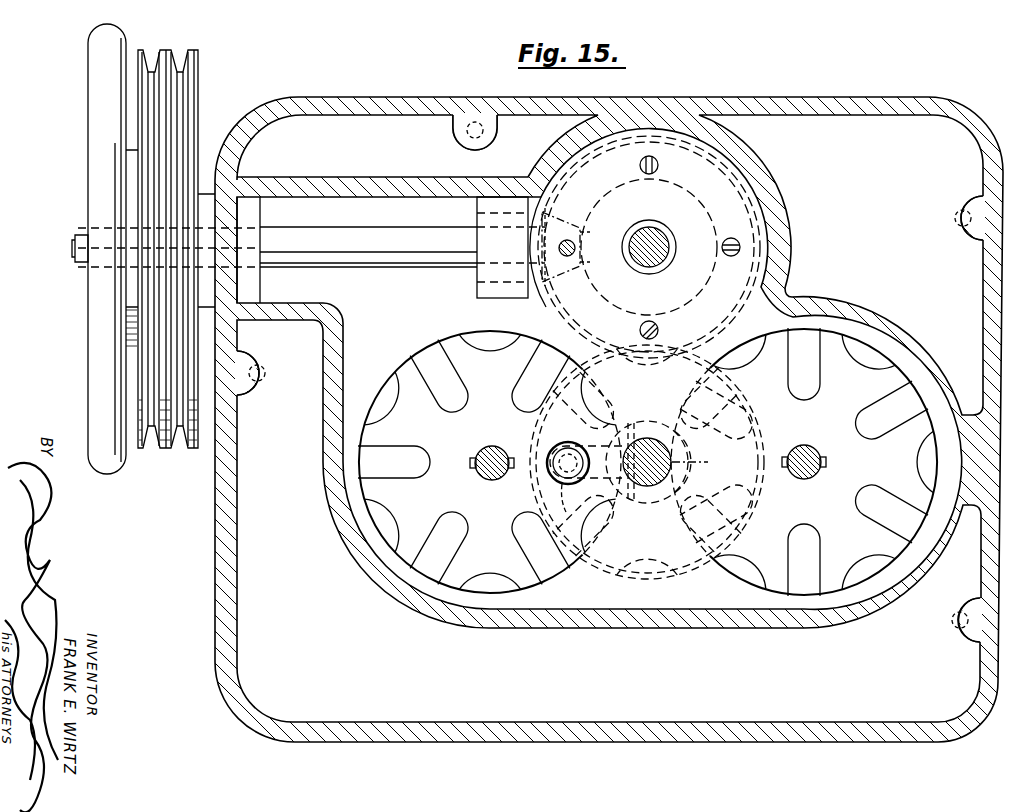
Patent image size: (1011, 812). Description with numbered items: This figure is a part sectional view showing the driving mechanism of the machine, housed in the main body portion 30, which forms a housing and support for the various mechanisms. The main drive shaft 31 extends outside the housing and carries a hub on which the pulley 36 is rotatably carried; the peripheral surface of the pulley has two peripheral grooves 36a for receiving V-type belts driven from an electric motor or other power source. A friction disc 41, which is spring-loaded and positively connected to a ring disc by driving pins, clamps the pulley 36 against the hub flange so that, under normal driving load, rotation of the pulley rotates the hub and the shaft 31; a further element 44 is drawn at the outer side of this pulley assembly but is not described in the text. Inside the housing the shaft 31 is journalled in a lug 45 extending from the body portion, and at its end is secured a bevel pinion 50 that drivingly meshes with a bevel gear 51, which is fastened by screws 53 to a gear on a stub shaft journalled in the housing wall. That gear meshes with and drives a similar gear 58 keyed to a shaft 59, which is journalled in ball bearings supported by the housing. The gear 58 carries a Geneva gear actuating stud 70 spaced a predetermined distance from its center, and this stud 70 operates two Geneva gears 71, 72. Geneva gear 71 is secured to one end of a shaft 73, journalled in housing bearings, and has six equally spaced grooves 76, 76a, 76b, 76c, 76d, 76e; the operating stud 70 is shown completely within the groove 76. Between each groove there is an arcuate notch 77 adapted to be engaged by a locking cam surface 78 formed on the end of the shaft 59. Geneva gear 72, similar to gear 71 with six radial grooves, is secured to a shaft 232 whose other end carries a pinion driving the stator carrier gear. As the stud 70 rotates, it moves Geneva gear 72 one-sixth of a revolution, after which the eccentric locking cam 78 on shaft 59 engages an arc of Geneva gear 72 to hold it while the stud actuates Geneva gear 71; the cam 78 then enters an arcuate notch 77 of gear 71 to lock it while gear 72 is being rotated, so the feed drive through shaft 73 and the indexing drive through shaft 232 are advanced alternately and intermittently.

The main body portion 30 is at (788, 103).
The main drive shaft 31 is at (395, 245).
The pulley 36 is at (195, 231).
The peripheral grooves 36a is at (183, 52).
The friction disc 41 is at (128, 282).
The pulley disc 44 is at (104, 86).
The lug 45 is at (480, 290).
The bevel pinion 50 is at (587, 216).
The bevel gear 51 is at (738, 198).
The screws 53 is at (740, 247).
The gear 58 is at (652, 578).
The shaft 59 is at (654, 452).
The Geneva gear actuating stud 70 is at (568, 482).
The Geneva gear 71 is at (501, 453).
The Geneva gear 72 is at (772, 372).
The shaft 73 is at (494, 450).
The groove 76 is at (586, 443).
The groove 76a is at (527, 379).
The groove 76b is at (455, 379).
The groove 76c is at (394, 444).
The groove 76d is at (442, 534).
The groove 76e is at (531, 539).
The arcuate notch 77 is at (504, 451).
The locking cam surface 78 is at (701, 463).
The shaft 232 is at (806, 450).